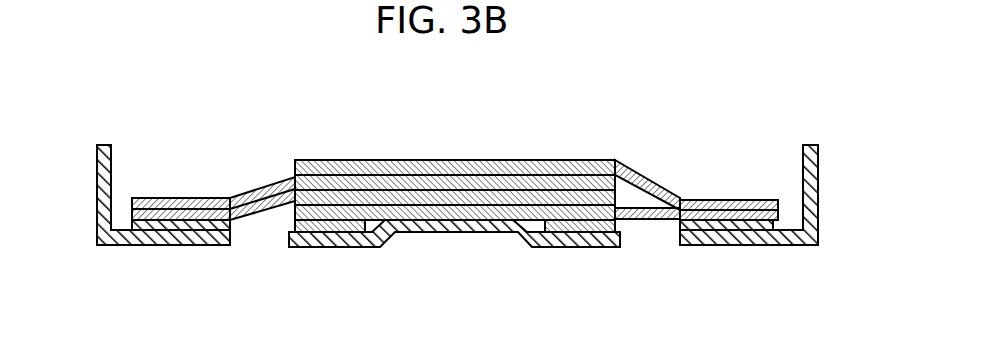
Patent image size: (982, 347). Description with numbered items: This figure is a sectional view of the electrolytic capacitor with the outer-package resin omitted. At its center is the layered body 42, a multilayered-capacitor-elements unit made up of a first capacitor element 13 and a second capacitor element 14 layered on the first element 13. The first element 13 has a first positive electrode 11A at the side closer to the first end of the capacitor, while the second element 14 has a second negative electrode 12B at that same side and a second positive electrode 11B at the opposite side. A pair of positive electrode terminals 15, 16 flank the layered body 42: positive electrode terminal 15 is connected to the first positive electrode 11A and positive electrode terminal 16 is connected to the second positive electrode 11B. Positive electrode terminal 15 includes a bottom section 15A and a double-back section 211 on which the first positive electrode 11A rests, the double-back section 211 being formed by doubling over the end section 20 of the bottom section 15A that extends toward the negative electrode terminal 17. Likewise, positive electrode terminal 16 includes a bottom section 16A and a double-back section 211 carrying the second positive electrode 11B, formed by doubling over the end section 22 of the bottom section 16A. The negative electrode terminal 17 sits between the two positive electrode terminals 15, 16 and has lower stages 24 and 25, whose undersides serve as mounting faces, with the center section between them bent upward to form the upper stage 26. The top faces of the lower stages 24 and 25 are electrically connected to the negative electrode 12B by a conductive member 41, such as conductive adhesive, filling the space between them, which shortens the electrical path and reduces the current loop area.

The layered body 42 is at (555, 122).
The first capacitor element 13 is at (383, 198).
The second capacitor element 14 is at (544, 218).
The second negative electrode 12B is at (294, 221).
The negative electrode upper stage 26 is at (457, 228).
The lower stage 24 is at (342, 238).
The lower stage 25 is at (558, 238).
The negative electrode terminal 17 is at (613, 253).
The conductive member 41 is at (319, 229).
The first positive electrode 11A is at (182, 220).
The second positive electrode 11B is at (723, 220).
The double-back section 211 is at (186, 228).
The positive electrode terminal 15 is at (106, 142).
The end section 20 is at (153, 240).
The bottom section 15A is at (128, 240).
The positive electrode terminal 16 is at (812, 140).
The end section 22 is at (746, 240).
The bottom section 16A is at (800, 240).